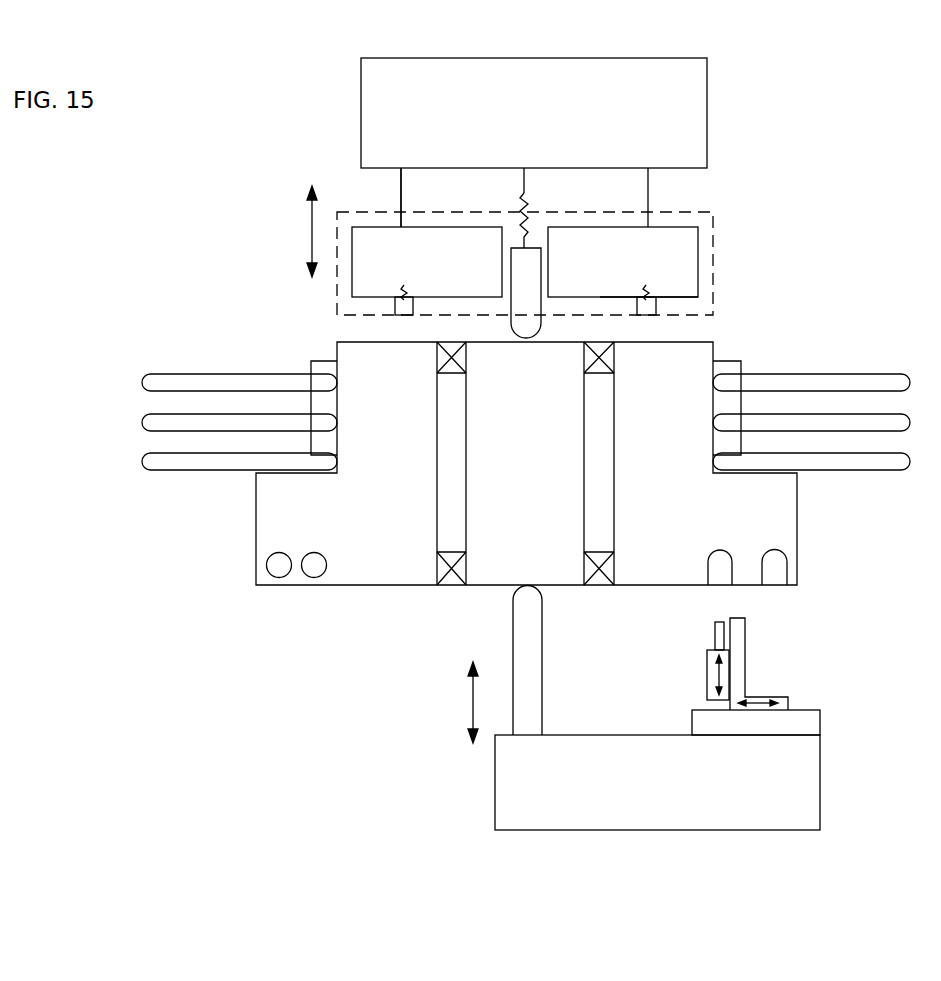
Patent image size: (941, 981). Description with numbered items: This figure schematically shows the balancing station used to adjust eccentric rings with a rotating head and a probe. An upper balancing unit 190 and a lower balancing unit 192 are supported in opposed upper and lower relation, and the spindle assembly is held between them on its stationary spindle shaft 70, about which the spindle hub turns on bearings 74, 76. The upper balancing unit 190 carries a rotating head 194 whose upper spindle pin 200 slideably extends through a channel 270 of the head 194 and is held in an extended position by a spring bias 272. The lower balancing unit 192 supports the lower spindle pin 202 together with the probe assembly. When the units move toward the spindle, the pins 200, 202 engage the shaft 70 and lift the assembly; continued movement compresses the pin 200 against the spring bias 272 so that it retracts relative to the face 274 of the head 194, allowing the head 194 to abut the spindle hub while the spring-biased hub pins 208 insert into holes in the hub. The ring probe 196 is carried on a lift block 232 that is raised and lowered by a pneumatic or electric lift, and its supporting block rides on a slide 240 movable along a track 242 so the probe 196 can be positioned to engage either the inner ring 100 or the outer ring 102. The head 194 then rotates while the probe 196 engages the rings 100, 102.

The spindle shaft 70 is at (541, 475).
The bearing 74 is at (434, 367).
The bearing 76 is at (436, 586).
The inner ring 100 is at (317, 577).
The outer ring 102 is at (275, 577).
The upper balancing unit 190 is at (708, 100).
The lower balancing unit 192 is at (692, 832).
The rotating head 194 is at (700, 257).
The ring probe 196 is at (718, 638).
The upper spindle pin 200 is at (530, 270).
The lower spindle pin 202 is at (537, 640).
The hub pin 208 is at (397, 312).
The lift block 232 is at (707, 675).
The slide 240 is at (782, 697).
The track 242 is at (818, 714).
The channel 270 is at (502, 243).
The spring bias 272 is at (532, 215).
The face 274 is at (682, 297).